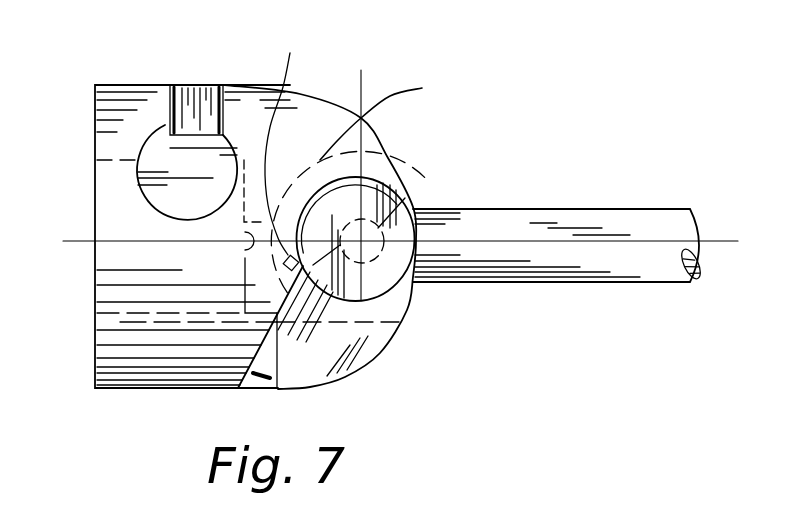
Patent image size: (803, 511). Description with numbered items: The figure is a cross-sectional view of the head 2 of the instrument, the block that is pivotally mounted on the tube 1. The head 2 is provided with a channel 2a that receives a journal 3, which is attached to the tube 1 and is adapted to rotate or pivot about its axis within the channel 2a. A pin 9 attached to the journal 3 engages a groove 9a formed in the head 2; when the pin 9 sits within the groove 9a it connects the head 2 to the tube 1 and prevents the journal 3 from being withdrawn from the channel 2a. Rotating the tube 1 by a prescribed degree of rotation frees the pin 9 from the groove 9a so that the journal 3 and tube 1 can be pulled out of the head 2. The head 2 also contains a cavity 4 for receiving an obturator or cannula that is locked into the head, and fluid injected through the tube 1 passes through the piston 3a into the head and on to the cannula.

The tube 1 is at (593, 222).
The head 2 is at (343, 378).
The channel 2a is at (245, 237).
The journal 3 is at (388, 276).
The piston 3a is at (403, 204).
The cavity 4 is at (95, 266).
The pin 9 is at (290, 53).
The groove 9a is at (366, 183).